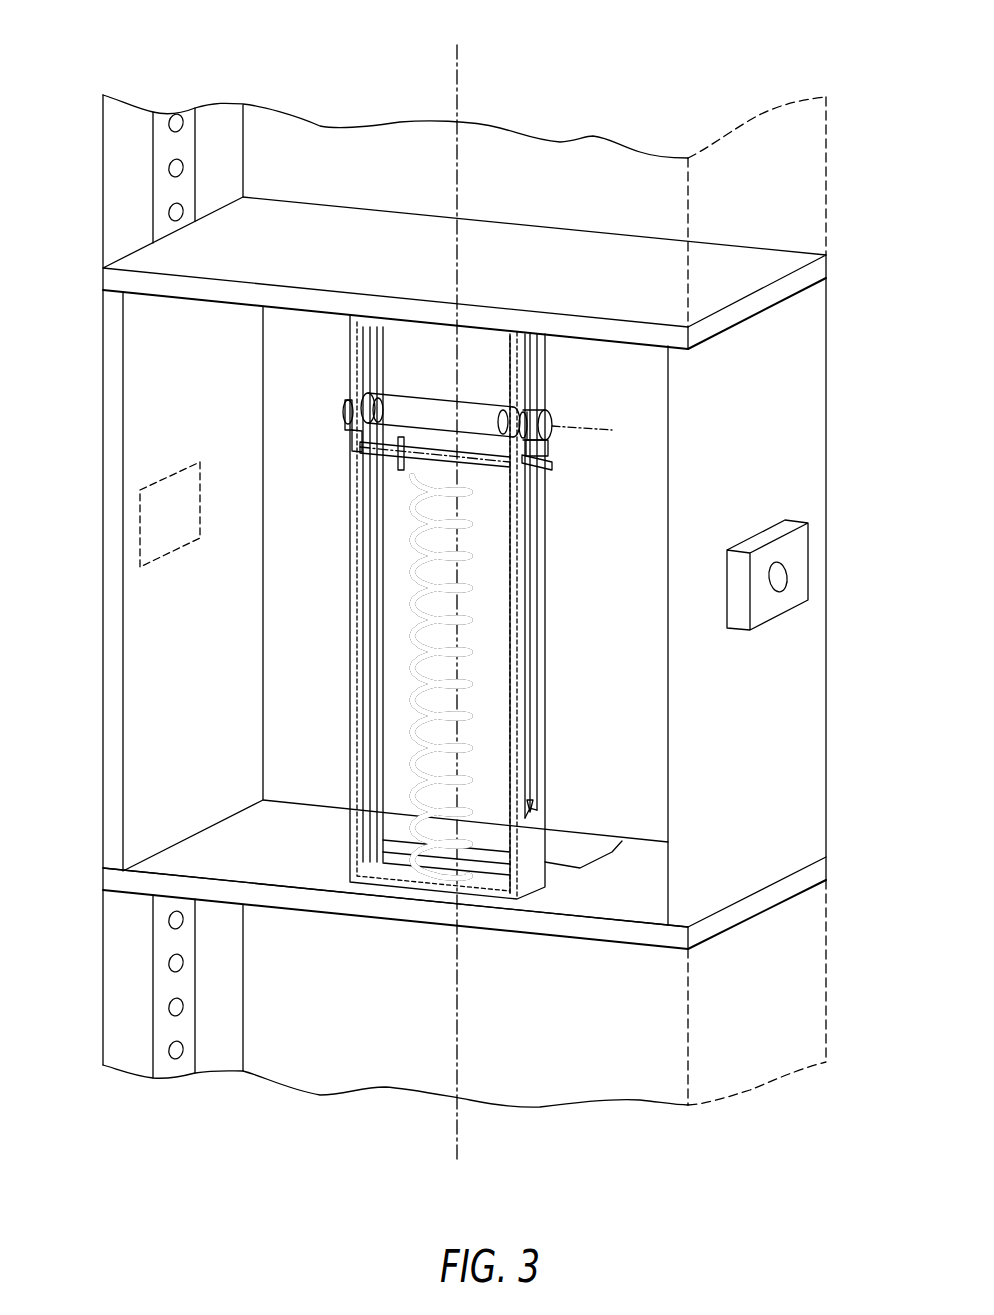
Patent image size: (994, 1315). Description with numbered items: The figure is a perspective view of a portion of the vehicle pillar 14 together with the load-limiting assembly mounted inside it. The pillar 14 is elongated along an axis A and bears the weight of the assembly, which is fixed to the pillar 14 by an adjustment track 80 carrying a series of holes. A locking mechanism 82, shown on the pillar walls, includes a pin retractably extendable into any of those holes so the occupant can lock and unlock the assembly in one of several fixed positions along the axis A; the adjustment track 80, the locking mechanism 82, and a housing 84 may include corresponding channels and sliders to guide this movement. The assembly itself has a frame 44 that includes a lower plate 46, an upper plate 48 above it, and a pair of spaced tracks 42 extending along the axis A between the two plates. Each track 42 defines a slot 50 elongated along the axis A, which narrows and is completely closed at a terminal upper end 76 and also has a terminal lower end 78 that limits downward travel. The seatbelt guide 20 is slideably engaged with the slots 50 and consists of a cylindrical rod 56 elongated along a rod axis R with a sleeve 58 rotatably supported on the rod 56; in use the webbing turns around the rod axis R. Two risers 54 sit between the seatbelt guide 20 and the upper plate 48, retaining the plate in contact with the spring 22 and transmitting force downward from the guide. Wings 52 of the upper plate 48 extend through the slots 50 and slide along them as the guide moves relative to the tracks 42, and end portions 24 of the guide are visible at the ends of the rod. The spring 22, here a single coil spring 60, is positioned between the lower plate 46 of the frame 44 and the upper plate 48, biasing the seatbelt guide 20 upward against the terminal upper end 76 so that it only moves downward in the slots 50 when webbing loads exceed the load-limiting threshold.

The vehicle pillar 14 is at (505, 601).
The seatbelt guide 20 is at (552, 418).
The spring 22 is at (370, 677).
The end portion 24 is at (378, 413).
The track 42 is at (348, 613).
The frame 44 is at (598, 946).
The lower plate 46 is at (378, 872).
The upper plate 48 is at (400, 452).
The slot 50 is at (365, 548).
The wing 52 is at (350, 443).
The riser 54 is at (348, 428).
The rod 56 is at (350, 403).
The sleeve 58 is at (437, 412).
The coil spring 60 is at (412, 652).
The terminal upper end 76 is at (545, 405).
The terminal lower end 78 is at (530, 812).
The adjustment track 80 is at (152, 168).
The locking mechanism 82 is at (140, 510).
The housing 84 is at (552, 942).
The axis A is at (456, 585).
The rod axis R is at (589, 432).